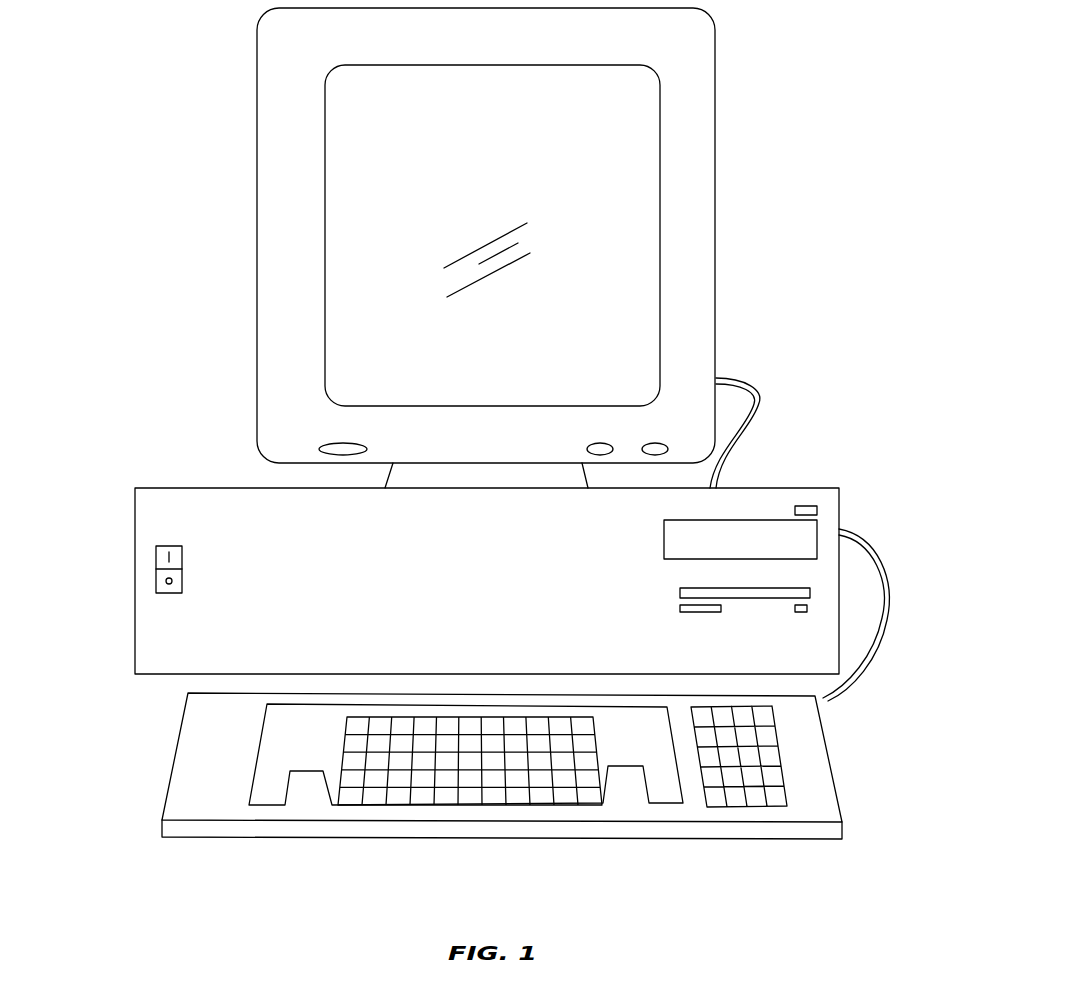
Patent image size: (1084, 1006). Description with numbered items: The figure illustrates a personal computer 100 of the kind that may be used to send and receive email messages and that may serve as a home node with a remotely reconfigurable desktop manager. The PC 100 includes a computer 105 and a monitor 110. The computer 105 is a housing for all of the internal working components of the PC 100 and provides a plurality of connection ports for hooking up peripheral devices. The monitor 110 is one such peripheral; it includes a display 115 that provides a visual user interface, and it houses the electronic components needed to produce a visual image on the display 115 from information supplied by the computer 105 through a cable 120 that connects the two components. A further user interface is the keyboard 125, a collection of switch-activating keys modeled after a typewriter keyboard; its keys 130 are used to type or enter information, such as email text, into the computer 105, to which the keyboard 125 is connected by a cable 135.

The personal computer 100 is at (176, 243).
The computer 105 is at (135, 505).
The monitor 110 is at (716, 322).
The display 115 is at (640, 197).
The cable 120 is at (757, 392).
The keyboard 125 is at (823, 733).
The keys 130 is at (229, 761).
The cable 135 is at (888, 600).